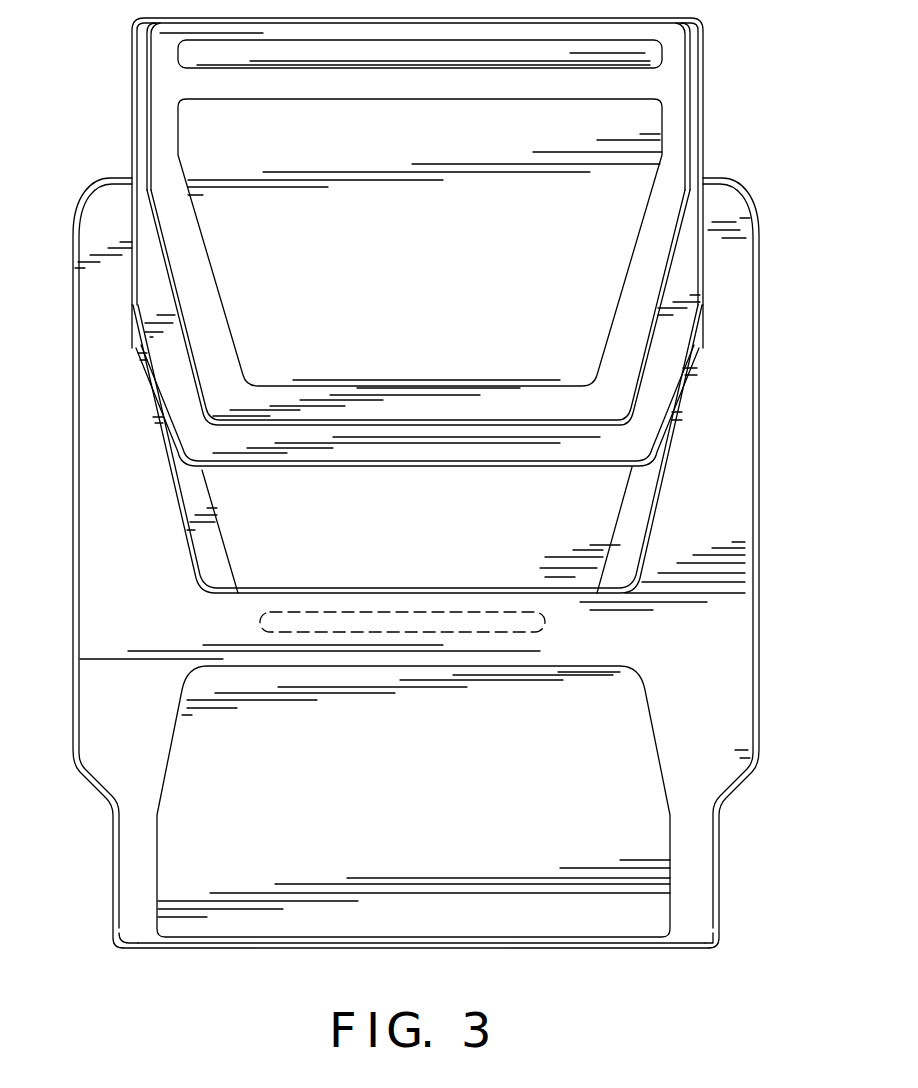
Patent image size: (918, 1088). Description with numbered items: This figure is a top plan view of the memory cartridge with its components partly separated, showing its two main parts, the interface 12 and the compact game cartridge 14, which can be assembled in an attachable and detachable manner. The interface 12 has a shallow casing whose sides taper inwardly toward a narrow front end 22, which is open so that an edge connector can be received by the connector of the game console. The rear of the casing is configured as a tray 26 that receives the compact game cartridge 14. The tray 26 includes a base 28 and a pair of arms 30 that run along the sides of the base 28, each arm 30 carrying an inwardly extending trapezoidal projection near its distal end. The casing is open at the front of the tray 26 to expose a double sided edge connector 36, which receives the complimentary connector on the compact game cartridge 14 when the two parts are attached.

The interface 12 is at (115, 762).
The compact game cartridge 14 is at (672, 132).
The narrow front end 22 is at (432, 946).
The tray 26 is at (142, 526).
The base 28 is at (421, 531).
The arms 30 is at (103, 355).
The double sided edge connector 36 is at (258, 617).